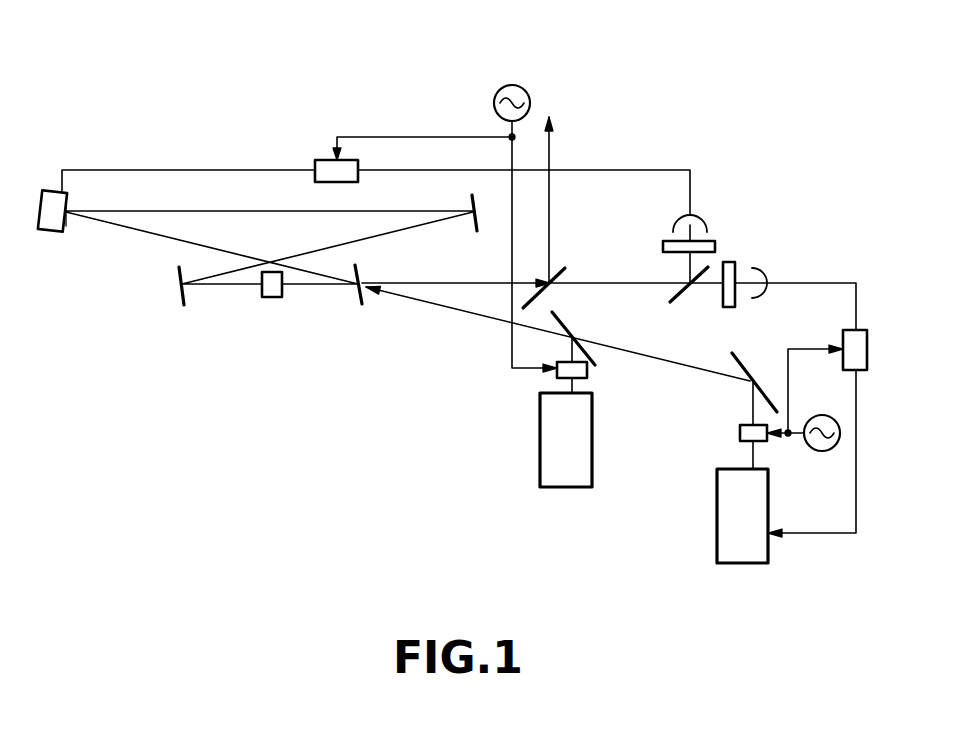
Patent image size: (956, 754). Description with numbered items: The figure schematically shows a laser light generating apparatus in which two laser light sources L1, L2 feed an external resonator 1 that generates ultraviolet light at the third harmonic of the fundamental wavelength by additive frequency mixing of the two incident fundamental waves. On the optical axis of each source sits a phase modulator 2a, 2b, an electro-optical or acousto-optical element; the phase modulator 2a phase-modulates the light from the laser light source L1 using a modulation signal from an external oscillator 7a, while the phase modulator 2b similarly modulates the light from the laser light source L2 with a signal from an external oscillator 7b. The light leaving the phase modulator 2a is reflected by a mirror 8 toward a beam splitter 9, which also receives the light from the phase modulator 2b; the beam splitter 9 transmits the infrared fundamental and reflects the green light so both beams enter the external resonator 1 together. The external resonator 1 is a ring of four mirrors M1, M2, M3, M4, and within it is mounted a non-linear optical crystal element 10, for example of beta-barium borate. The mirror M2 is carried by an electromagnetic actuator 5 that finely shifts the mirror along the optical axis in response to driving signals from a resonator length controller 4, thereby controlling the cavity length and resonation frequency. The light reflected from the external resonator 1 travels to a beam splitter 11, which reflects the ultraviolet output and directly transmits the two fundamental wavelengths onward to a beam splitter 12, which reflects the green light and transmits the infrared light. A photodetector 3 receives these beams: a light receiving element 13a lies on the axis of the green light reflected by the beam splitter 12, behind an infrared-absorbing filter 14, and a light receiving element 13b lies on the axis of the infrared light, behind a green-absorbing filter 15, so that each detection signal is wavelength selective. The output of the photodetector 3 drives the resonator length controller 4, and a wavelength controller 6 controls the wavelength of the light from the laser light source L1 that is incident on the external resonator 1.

The external resonator 1 is at (201, 320).
The phase modulator 2a is at (740, 433).
The phase modulator 2b is at (590, 372).
The photodetector 3 is at (719, 250).
The resonator length controller 4 is at (320, 160).
The electromagnetic actuator 5 is at (45, 232).
The wavelength controller 6 is at (843, 340).
The external oscillator 7a is at (820, 451).
The external oscillator 7b is at (512, 85).
The mirror 8 is at (757, 340).
The beam splitter 9 is at (575, 318).
The non-linear optical crystal element 10 is at (272, 297).
The beam splitter 11 is at (568, 271).
The beam splitter 12 is at (678, 303).
The light receiving element 13a is at (762, 272).
The light receiving element 13b is at (700, 222).
The filter 14 is at (723, 305).
The filter 15 is at (666, 244).
The mirror M1 is at (365, 271).
The mirror M2 is at (68, 202).
The mirror M3 is at (470, 201).
The mirror M4 is at (178, 276).
The laser light source L1 is at (738, 563).
The laser light source L2 is at (557, 487).